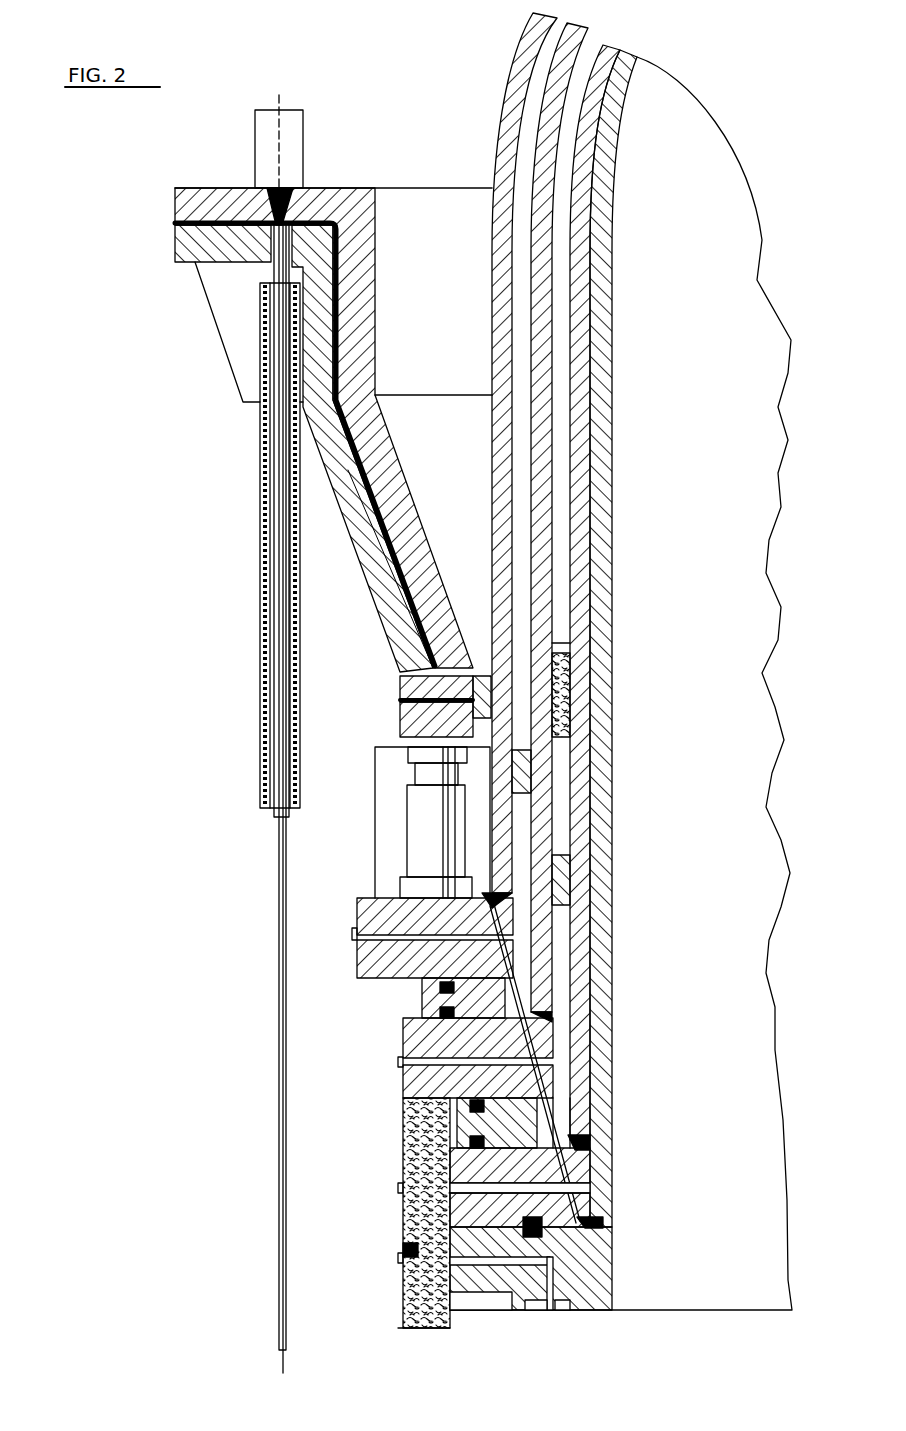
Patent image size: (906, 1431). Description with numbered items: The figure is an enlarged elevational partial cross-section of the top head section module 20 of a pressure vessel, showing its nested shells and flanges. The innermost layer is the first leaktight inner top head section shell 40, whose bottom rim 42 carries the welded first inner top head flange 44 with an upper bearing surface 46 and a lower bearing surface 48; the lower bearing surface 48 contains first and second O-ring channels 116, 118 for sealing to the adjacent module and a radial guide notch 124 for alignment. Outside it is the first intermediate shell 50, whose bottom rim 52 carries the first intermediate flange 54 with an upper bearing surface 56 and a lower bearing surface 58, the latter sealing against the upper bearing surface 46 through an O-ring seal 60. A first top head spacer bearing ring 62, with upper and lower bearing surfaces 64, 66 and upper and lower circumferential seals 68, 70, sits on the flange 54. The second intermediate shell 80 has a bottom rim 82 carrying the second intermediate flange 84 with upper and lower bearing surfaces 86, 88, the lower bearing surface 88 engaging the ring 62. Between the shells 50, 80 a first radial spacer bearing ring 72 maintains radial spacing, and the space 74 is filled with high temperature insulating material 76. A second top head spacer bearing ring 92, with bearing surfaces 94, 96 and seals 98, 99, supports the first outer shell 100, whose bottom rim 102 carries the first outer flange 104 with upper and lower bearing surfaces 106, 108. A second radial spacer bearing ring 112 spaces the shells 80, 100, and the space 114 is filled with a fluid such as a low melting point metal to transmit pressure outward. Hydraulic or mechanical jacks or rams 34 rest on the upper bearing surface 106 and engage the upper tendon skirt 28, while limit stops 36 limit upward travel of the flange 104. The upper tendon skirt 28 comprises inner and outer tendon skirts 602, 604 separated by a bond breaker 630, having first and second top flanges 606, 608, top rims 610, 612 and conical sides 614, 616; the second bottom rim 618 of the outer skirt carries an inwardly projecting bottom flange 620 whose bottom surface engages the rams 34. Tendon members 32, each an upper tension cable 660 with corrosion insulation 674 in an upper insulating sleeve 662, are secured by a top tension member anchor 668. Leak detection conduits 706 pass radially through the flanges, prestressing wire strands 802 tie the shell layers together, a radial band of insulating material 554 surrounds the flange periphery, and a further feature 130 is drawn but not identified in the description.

The top head section module 20 is at (100, 564).
The upper tendon skirt 28 is at (406, 179).
The tension or tendon members 32 is at (255, 706).
The hydraulic or mechanical jacks or rams 34 is at (412, 838).
The limit stops 36 is at (375, 792).
The first leaktight inner top head section shell 40 is at (612, 520).
The bottom rim 42 is at (600, 1221).
The first inner top head flange 44 is at (595, 1258).
The upper bearing surface 46 is at (430, 1210).
The lower bearing surface 48 is at (612, 1314).
The first intermediate shell 50 is at (600, 564).
The bottom rim 52 is at (590, 1142).
The first intermediate flange 54 is at (612, 1168).
The upper bearing surface 56 is at (424, 1149).
The lower bearing surface 58 is at (410, 1250).
The O-ring seal 60 is at (522, 1224).
The first top head spacer bearing ring 62 is at (456, 1128).
The upper bearing surface 64 is at (514, 1100).
The lower bearing surface 66 is at (532, 1168).
The upper circumferential seal 68 is at (470, 1104).
The lower circumferential seal 70 is at (520, 1165).
The first radial spacer bearing plate or ring 72 is at (570, 876).
The space 74 is at (570, 612).
The high temperature insulating material 76 is at (568, 667).
The second intermediate shell 80 is at (560, 640).
The bottom rim 82 is at (590, 1008).
The second intermediate flange 84 is at (404, 1090).
The upper bearing surface 86 is at (410, 1031).
The lower bearing surface 88 is at (410, 1121).
The second top head spacer bearing ring 92 is at (430, 1000).
The upper bearing surface 94 is at (478, 984).
The lower bearing surface 96 is at (464, 1040).
The upper circumferential seal 98 is at (444, 982).
The lower circumferential seal 99 is at (427, 1040).
The first outer shell 100 is at (492, 464).
The bottom rim 102 is at (512, 898).
The first outer flange 104 is at (362, 950).
The upper bearing surface 106 is at (360, 898).
The lower bearing surface 108 is at (372, 978).
The second radial spacer bearing plate or ring 112 is at (530, 765).
The space 114 is at (518, 550).
The first O-ring channel 116 is at (562, 1314).
The second O-ring channel 118 is at (536, 1314).
The radial guide notch 124 is at (480, 1314).
The stop 130 is at (480, 676).
The radial band of insulating material 554 is at (405, 1328).
The inner tendon skirt 602 is at (400, 443).
The outer tendon skirt 604 is at (385, 655).
The first top flange 606 is at (228, 188).
The second top flange 608 is at (185, 235).
The first top rim 610 is at (375, 280).
The second top rim 612 is at (322, 333).
The first conical side 614 is at (402, 521).
The second conical side 616 is at (380, 603).
The second bottom rim 618 is at (420, 726).
The inwardly projecting bottom flange 620 is at (412, 682).
The bond breaker 630 is at (379, 558).
The upper tension cable 660 is at (283, 858).
The upper insulating sleeve 662 is at (262, 751).
The top tension member anchor 668 is at (303, 138).
The corrosion insulation 674 is at (276, 812).
The leak detection conduits 706 is at (365, 929).
The prestressing wire strands 802 is at (588, 1095).